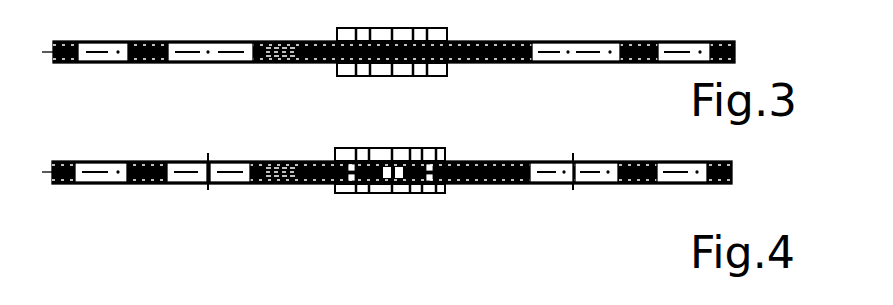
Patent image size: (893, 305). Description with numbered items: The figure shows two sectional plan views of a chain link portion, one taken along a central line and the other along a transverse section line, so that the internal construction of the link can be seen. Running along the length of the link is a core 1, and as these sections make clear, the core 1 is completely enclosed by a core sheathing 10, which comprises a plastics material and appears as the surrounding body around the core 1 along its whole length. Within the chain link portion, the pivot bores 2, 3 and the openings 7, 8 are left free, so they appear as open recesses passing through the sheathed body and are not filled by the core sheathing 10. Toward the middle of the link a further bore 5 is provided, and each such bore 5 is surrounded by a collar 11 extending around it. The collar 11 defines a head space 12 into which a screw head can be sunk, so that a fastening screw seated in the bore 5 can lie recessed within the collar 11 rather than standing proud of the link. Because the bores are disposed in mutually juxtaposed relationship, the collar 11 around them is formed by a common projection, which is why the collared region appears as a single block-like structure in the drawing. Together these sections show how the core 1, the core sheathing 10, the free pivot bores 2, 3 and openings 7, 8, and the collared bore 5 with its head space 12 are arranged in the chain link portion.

In FIG. 3, the core 1 is at (455, 64).
In FIG. 4, the core 1 is at (512, 185).
In FIG. 3, the pivot bore 2 is at (580, 63).
In FIG. 3, the pivot bore 3 is at (217, 58).
In FIG. 4, the pivot bore 3 is at (190, 165).
In FIG. 4, the bore 5 is at (348, 192).
In FIG. 3, the opening 7 is at (673, 62).
In FIG. 4, the opening 7 is at (680, 162).
In FIG. 3, the opening 8 is at (112, 57).
In FIG. 4, the opening 8 is at (100, 163).
In FIG. 4, the core sheathing 10 is at (500, 160).
In FIG. 3, the collar 11 is at (370, 27).
In FIG. 4, the collar 11 is at (338, 150).
In FIG. 4, the head space 12 is at (420, 192).